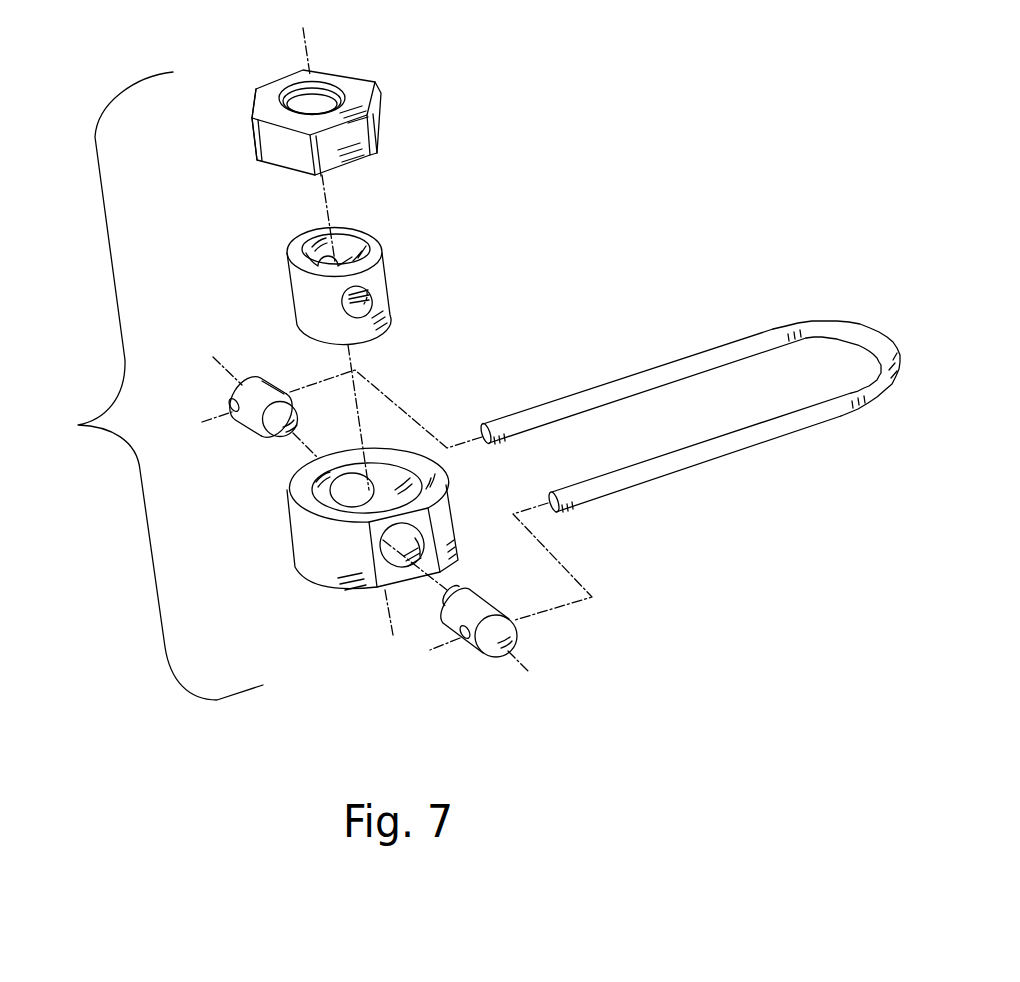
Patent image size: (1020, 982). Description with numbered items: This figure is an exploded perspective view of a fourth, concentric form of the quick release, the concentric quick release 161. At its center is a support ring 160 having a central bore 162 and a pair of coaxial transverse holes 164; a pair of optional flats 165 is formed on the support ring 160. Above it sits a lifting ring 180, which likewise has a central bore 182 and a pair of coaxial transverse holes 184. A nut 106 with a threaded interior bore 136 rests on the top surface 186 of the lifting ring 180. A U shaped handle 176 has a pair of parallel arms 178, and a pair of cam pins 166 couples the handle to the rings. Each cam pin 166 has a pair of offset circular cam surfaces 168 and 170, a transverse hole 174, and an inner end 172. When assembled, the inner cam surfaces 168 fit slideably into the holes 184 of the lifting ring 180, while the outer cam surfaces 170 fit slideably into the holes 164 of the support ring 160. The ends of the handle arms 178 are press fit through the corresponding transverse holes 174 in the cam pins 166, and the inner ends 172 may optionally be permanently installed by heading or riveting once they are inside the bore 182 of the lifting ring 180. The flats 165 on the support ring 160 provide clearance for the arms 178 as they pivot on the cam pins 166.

The nut 106 is at (383, 94).
The threaded interior bore 136 is at (313, 97).
The support ring 160 is at (368, 524).
The concentric quick release 161 is at (148, 386).
The central bore 162 is at (408, 470).
The coaxial transverse holes 164 is at (420, 538).
The flats 165 is at (383, 577).
The cam pins 166 is at (252, 372).
The inner cam surface 168 is at (268, 412).
The outer cam surface 170 is at (252, 393).
The inner end 172 is at (280, 428).
The transverse hole 174 is at (468, 638).
The U shaped handle 176 is at (689, 395).
The parallel arms 178 is at (675, 450).
The lifting ring 180 is at (372, 260).
The central bore 182 is at (343, 247).
The coaxial transverse holes 184 is at (370, 307).
The top surface 186 is at (370, 238).